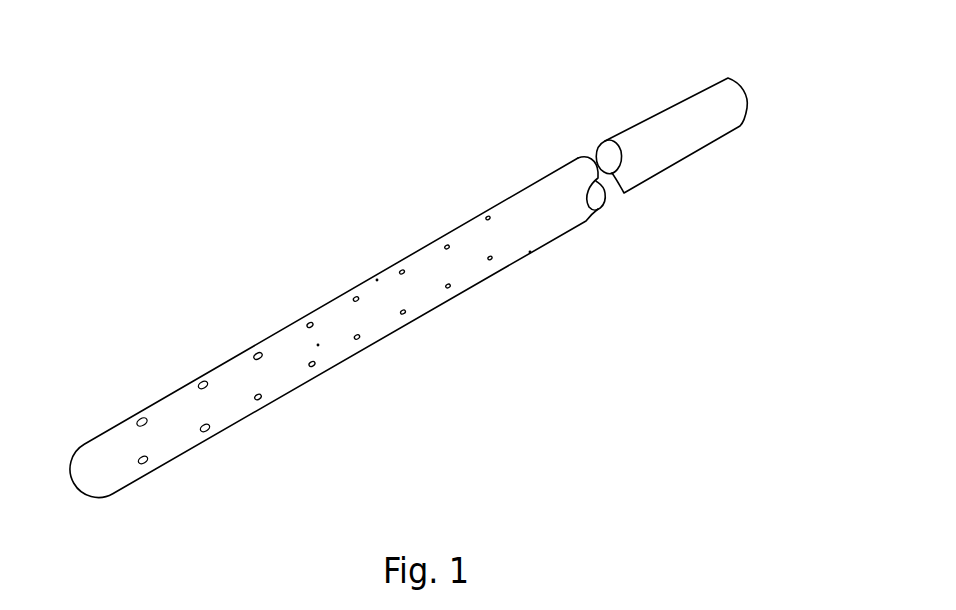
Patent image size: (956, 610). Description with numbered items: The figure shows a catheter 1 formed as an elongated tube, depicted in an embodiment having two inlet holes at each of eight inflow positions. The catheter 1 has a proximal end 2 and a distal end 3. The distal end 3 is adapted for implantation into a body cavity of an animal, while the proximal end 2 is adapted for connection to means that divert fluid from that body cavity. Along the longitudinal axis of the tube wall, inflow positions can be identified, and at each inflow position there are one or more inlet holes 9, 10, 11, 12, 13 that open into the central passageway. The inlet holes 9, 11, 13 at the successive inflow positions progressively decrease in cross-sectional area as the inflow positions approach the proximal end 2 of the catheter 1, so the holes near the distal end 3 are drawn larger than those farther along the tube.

The catheter 1 is at (411, 370).
The proximal end 2 is at (745, 95).
The distal end 3 is at (76, 486).
The inlet hole 9 is at (147, 466).
The inlet hole 10 is at (142, 417).
The inlet hole 11 is at (206, 433).
The inlet hole 12 is at (202, 381).
The inlet hole 13 is at (261, 401).